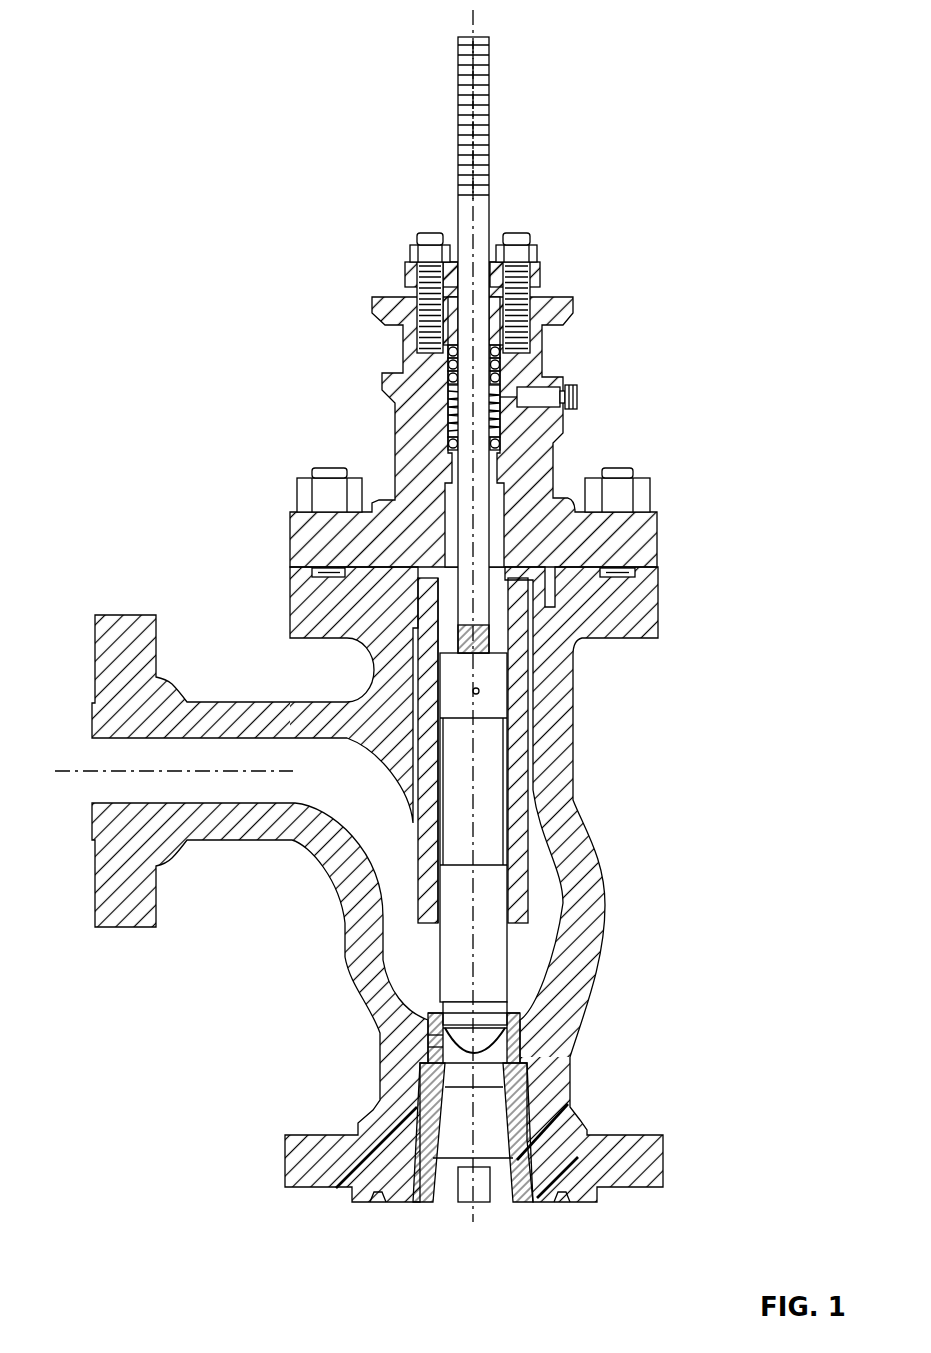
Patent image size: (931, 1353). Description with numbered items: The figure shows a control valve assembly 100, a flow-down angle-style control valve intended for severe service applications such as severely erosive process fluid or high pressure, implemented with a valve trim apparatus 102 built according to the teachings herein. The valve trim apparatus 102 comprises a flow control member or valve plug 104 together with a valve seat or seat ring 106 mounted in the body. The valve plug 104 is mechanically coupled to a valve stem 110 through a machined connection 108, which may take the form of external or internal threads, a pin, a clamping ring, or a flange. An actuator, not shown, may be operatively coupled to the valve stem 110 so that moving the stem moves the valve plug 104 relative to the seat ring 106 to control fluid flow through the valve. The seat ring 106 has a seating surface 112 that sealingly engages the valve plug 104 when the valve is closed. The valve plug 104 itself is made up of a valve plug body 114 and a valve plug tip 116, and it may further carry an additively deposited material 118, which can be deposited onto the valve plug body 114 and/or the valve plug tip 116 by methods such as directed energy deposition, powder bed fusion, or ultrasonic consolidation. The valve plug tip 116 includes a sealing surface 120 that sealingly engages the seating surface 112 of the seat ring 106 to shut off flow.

The control valve assembly 100 is at (577, 48).
The valve trim apparatus 102 is at (602, 979).
The valve plug 104 is at (433, 977).
The seat ring 106 is at (517, 1060).
The machined connection 108 is at (478, 692).
The valve stem 110 is at (489, 211).
The seating surface 112 is at (517, 1030).
The valve plug body 114 is at (437, 938).
The valve plug tip 116 is at (443, 1050).
The additively deposited material 118 is at (475, 1013).
The sealing surface 120 is at (438, 1037).